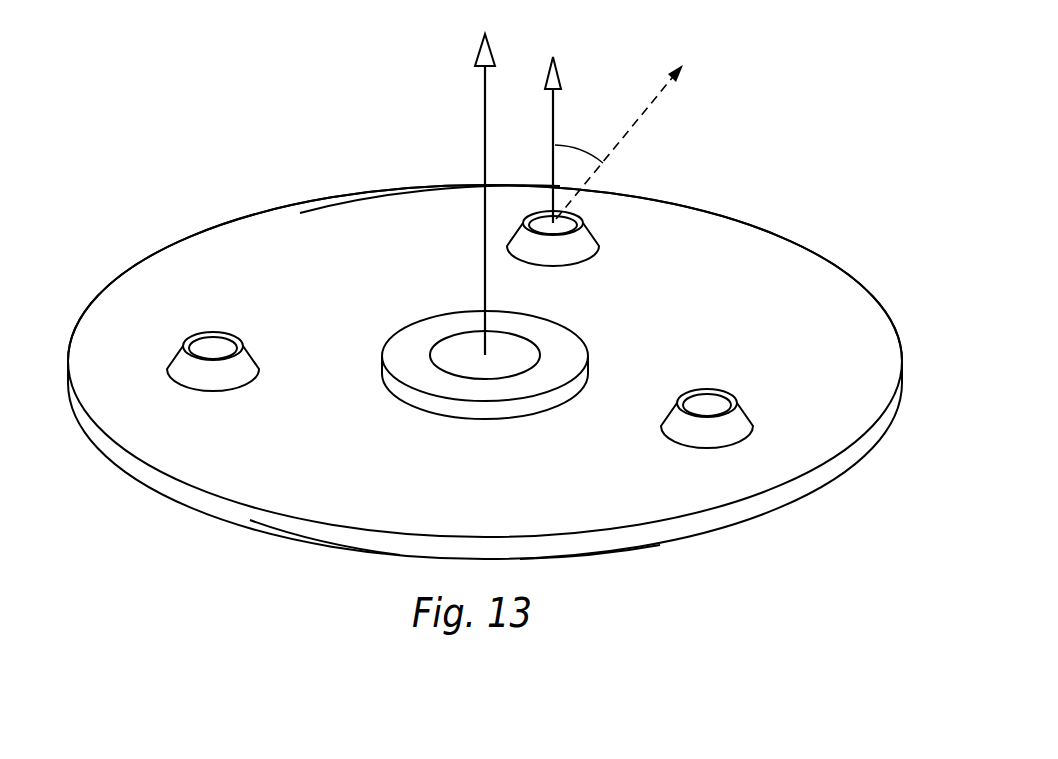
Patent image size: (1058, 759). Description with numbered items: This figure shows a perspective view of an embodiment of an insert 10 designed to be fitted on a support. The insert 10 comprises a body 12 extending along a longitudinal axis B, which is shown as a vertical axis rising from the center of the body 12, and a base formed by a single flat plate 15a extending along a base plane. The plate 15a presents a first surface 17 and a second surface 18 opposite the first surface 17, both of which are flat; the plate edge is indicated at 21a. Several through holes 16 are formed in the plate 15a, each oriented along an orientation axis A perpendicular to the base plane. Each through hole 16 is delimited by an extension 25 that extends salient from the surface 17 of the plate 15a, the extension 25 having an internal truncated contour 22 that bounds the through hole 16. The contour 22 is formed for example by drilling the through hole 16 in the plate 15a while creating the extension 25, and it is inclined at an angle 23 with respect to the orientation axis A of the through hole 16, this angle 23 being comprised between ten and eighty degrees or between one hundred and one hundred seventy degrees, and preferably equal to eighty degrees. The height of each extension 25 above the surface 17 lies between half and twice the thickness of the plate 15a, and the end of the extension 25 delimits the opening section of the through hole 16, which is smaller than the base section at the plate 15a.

The insert 10 is at (259, 157).
The body 12 is at (567, 347).
The plate 15a is at (831, 221).
The through hole 16 is at (208, 345).
The first surface 17 is at (360, 185).
The second surface 18 is at (327, 567).
The peripheral side wall 21a is at (580, 542).
The contour 22 is at (213, 332).
The angle 23 is at (592, 167).
The extension 25 is at (187, 367).
The orientation axis A is at (555, 116).
The longitudinal axis B is at (484, 104).